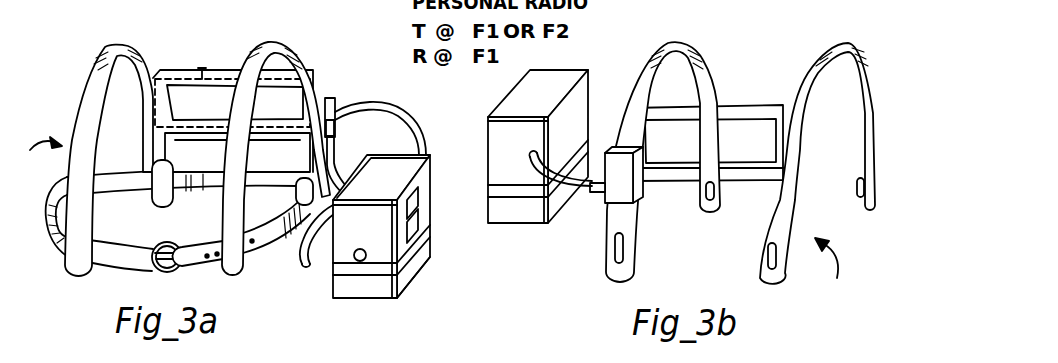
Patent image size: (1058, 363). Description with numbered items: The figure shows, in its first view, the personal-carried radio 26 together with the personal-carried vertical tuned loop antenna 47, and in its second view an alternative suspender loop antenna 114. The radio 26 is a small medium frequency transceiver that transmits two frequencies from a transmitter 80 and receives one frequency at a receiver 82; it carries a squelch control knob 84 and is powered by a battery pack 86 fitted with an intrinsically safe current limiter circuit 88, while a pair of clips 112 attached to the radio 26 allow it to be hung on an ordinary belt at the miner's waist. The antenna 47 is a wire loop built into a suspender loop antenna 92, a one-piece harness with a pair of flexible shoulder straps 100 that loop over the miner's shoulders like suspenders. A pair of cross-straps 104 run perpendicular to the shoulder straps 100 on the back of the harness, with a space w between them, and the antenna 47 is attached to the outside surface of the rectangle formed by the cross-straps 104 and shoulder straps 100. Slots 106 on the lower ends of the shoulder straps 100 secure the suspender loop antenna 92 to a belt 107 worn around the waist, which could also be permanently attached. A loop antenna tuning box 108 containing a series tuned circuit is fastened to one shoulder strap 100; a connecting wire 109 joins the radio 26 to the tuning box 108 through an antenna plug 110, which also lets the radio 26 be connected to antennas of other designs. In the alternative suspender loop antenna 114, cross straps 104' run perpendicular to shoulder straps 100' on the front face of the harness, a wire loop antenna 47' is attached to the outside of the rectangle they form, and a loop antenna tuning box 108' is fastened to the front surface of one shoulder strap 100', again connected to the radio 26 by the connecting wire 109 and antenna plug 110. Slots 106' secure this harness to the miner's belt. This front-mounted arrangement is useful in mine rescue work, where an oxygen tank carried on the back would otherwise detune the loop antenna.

In FIG. 3A, the personal-carried radio 26 is at (432, 166).
In FIG. 3B, the personal-carried radio 26 is at (548, 78).
In FIG. 3A, the personal-carried vertical tuned loop antenna 47 is at (237, 105).
In FIG. 3B, the wire loop antenna 47' is at (710, 143).
In FIG. 3A, the transmitter 80 is at (418, 191).
In FIG. 3A, the receiver 82 is at (418, 219).
In FIG. 3A, the squelch control knob 84 is at (361, 249).
In FIG. 3A, the battery pack 86 is at (380, 286).
In FIG. 3A, the intrinsically safe current limiter circuit 88 is at (421, 241).
In FIG. 3A, the suspender loop antenna 92 is at (37, 152).
In FIG. 3A, the shoulder straps 100 is at (193, 145).
In FIG. 3B, the shoulder straps 100' is at (742, 147).
In FIG. 3A, the cross-straps 104 is at (233, 95).
In FIG. 3B, the cross straps 104' is at (706, 141).
In FIG. 3A, the slots 106 is at (210, 192).
In FIG. 3B, the slots 106' is at (739, 232).
In FIG. 3A, the belt 107 is at (62, 250).
In FIG. 3A, the loop antenna tuning box 108 is at (350, 105).
In FIG. 3B, the loop antenna tuning box 108' is at (647, 168).
In FIG. 3A, the connecting wire 109 is at (405, 103).
In FIG. 3B, the connecting wire 109 is at (535, 188).
In FIG. 3A, the antenna plug 110 is at (337, 129).
In FIG. 3B, the antenna plug 110 is at (594, 192).
In FIG. 3A, the clips 112 is at (291, 270).
In FIG. 3B, the suspender loop antenna 114 is at (834, 272).